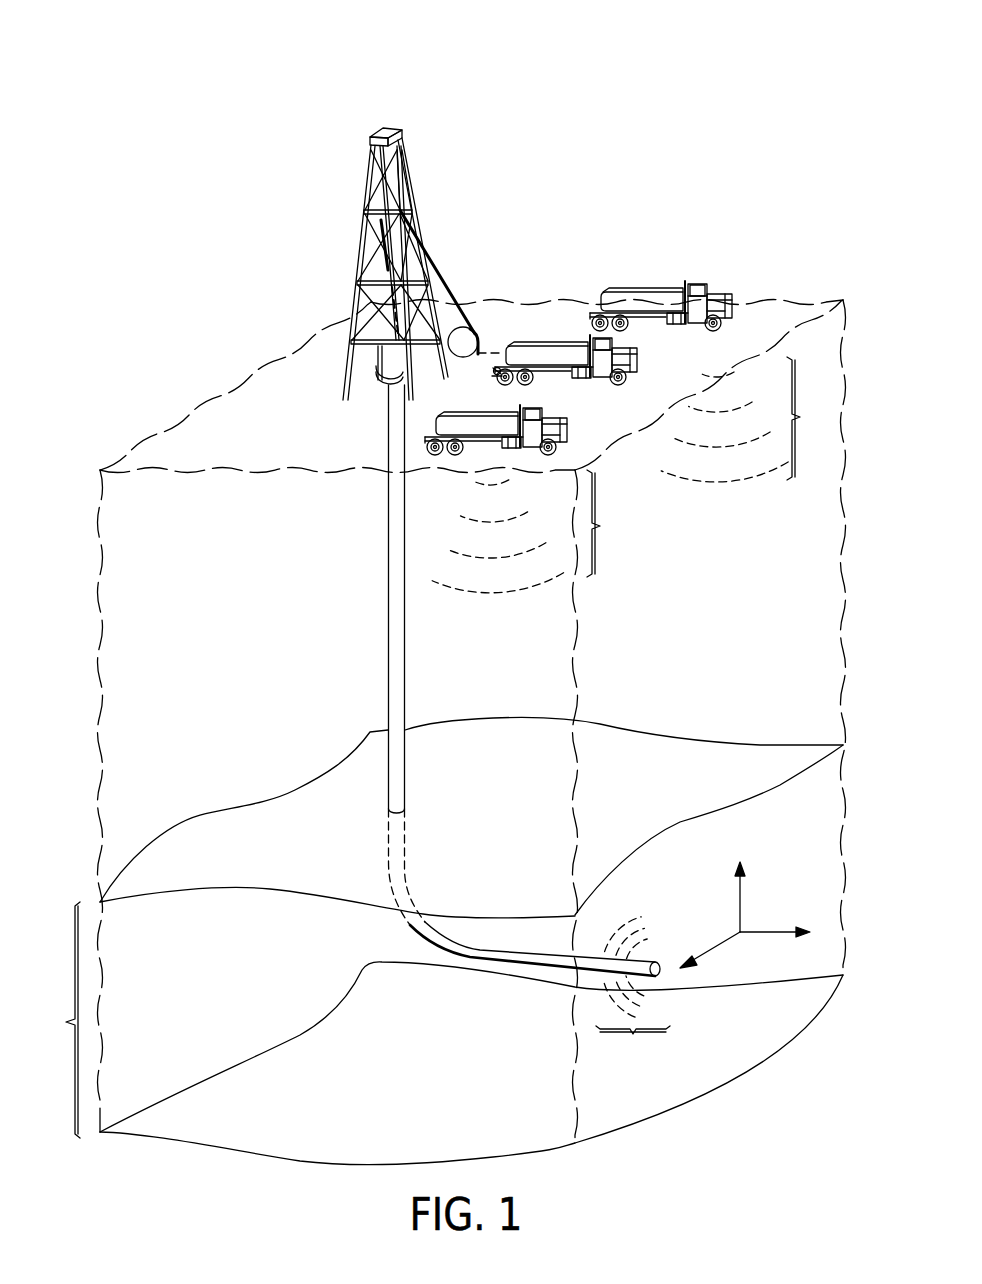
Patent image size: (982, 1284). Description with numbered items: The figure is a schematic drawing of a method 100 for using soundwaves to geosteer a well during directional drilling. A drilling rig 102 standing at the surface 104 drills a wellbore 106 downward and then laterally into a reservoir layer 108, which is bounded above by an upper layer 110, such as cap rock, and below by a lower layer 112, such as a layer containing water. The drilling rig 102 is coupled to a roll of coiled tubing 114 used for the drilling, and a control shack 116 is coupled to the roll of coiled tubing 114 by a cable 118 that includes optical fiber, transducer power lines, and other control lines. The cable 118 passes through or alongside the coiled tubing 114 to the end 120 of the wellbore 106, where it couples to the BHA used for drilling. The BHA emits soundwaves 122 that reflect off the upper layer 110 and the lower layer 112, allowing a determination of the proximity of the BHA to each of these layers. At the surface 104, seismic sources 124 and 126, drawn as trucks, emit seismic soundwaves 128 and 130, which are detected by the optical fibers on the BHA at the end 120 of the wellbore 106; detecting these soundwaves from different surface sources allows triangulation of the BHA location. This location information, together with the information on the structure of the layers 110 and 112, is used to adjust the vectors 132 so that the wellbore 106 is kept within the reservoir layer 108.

The method 100 is at (288, 65).
The drilling rig 102 is at (361, 230).
The surface 104 is at (266, 367).
The wellbore 106 is at (388, 562).
The reservoir layer 108 is at (50, 1020).
The upper layer 110 is at (685, 738).
The lower layer 112 is at (262, 1063).
The roll of coiled tubing 114 is at (482, 342).
The control shack 116 is at (548, 345).
The cable 118 is at (493, 360).
The end of the wellbore 120 is at (657, 957).
The soundwaves 122 is at (633, 1049).
The seismic source 124 is at (578, 428).
The seismic source 126 is at (648, 290).
The seismic soundwaves 128 is at (539, 533).
The seismic soundwaves 130 is at (753, 421).
The vectors 132 is at (760, 930).